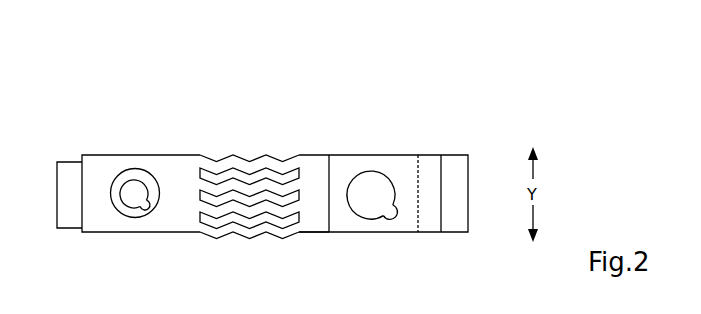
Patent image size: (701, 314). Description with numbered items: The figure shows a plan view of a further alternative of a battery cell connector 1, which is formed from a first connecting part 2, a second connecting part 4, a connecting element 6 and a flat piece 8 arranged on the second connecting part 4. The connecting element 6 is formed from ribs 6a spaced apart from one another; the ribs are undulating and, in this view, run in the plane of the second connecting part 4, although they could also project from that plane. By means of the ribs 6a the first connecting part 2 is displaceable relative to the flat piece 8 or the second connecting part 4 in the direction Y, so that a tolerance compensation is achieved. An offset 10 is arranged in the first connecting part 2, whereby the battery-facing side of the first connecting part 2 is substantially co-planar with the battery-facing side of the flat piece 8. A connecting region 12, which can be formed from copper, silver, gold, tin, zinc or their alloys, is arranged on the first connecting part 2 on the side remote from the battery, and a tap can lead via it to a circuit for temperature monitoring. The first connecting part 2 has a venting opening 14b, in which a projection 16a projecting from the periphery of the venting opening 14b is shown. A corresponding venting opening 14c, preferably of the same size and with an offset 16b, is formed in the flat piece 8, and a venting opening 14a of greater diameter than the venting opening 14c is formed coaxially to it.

The battery cell connector 1 is at (323, 84).
The first connecting part 2 is at (344, 164).
The second connecting part 4 is at (100, 165).
The connecting element 6 is at (216, 158).
The ribs 6a is at (273, 186).
The flat piece 8 is at (67, 200).
The offset 10 is at (315, 223).
The connecting region 12 is at (430, 164).
The venting opening 14a is at (138, 176).
The venting opening 14b is at (375, 180).
The venting opening 14c is at (132, 197).
The projection 16a is at (392, 218).
The offset 16b is at (146, 208).